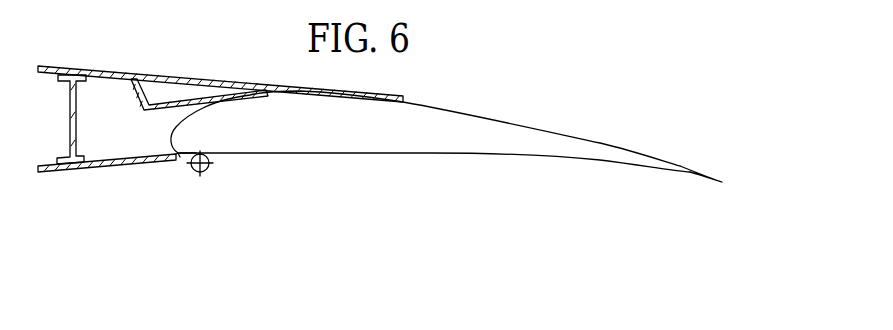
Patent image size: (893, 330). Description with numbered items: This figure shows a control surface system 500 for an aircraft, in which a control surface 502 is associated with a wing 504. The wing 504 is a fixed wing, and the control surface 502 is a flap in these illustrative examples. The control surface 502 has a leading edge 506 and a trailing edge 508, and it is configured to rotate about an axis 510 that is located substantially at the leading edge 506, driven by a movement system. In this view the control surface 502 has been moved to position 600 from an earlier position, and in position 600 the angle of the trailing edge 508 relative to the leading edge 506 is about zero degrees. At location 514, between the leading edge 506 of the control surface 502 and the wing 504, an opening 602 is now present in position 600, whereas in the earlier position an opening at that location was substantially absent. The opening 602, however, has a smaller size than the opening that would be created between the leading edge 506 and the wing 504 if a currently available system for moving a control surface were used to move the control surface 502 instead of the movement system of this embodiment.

The control surface system 500 is at (596, 59).
The control surface 502 is at (497, 127).
The wing 504 is at (83, 66).
The leading edge 506 is at (173, 141).
The trailing edge 508 is at (718, 177).
The axis 510 is at (207, 177).
The location 514 is at (178, 168).
The position 600 is at (472, 155).
The opening 602 is at (187, 177).